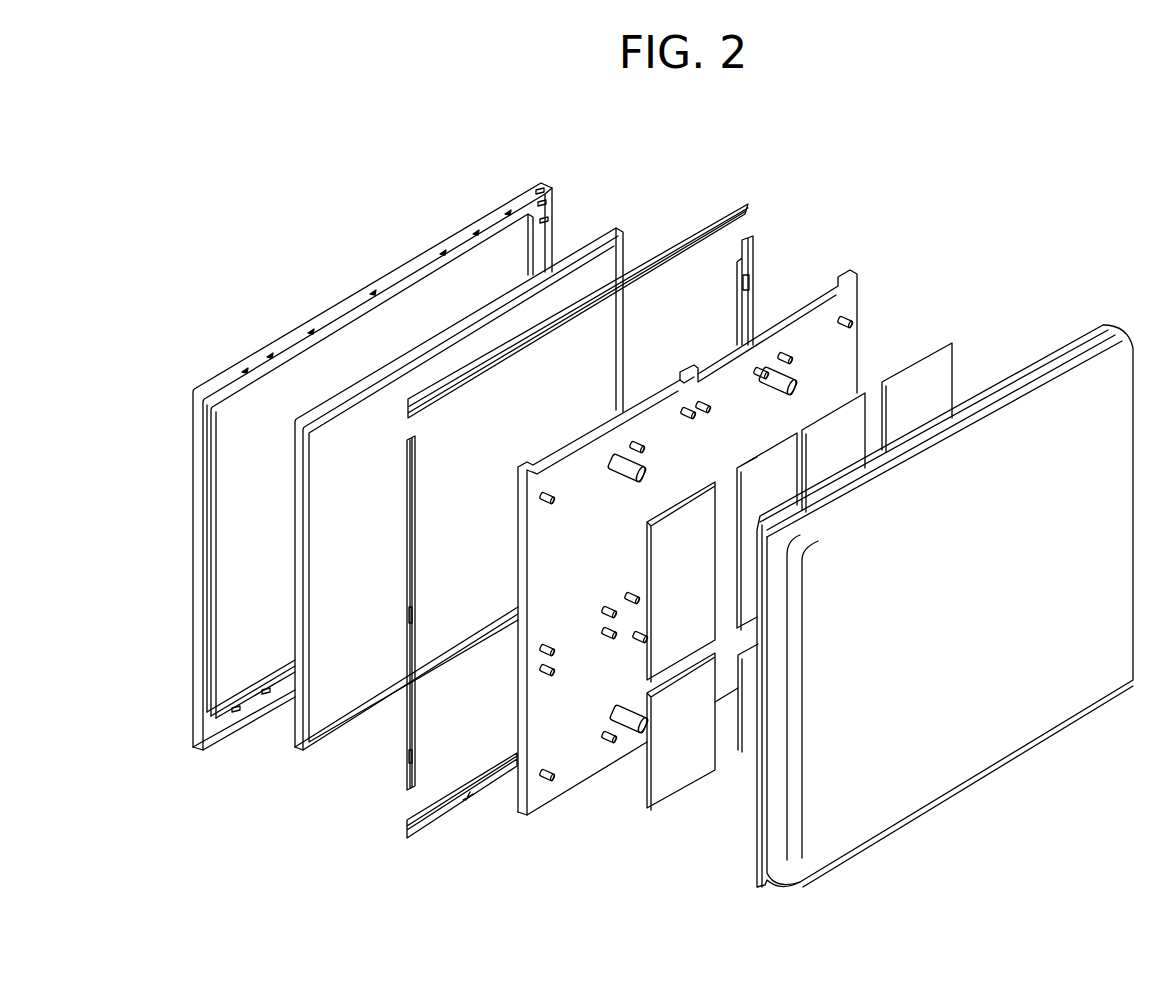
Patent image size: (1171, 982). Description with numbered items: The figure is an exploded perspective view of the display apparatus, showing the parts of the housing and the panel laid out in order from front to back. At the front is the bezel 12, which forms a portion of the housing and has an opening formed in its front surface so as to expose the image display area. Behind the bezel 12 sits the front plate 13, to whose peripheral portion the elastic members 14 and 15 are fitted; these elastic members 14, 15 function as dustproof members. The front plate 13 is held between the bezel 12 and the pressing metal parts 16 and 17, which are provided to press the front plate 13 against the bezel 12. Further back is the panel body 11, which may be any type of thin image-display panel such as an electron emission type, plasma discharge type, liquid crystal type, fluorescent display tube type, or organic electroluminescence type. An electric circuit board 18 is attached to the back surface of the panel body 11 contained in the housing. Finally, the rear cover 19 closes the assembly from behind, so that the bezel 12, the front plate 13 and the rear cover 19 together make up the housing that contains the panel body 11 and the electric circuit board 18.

The panel body 11 is at (817, 323).
The bezel 12 is at (428, 248).
The front plate 13 is at (557, 297).
The elastic member 14 is at (347, 722).
The elastic member 15 is at (268, 733).
The pressing metal part 16 is at (648, 267).
The pressing metal part 17 is at (752, 270).
The electric circuit board 18 is at (907, 377).
The rear cover 19 is at (1025, 440).